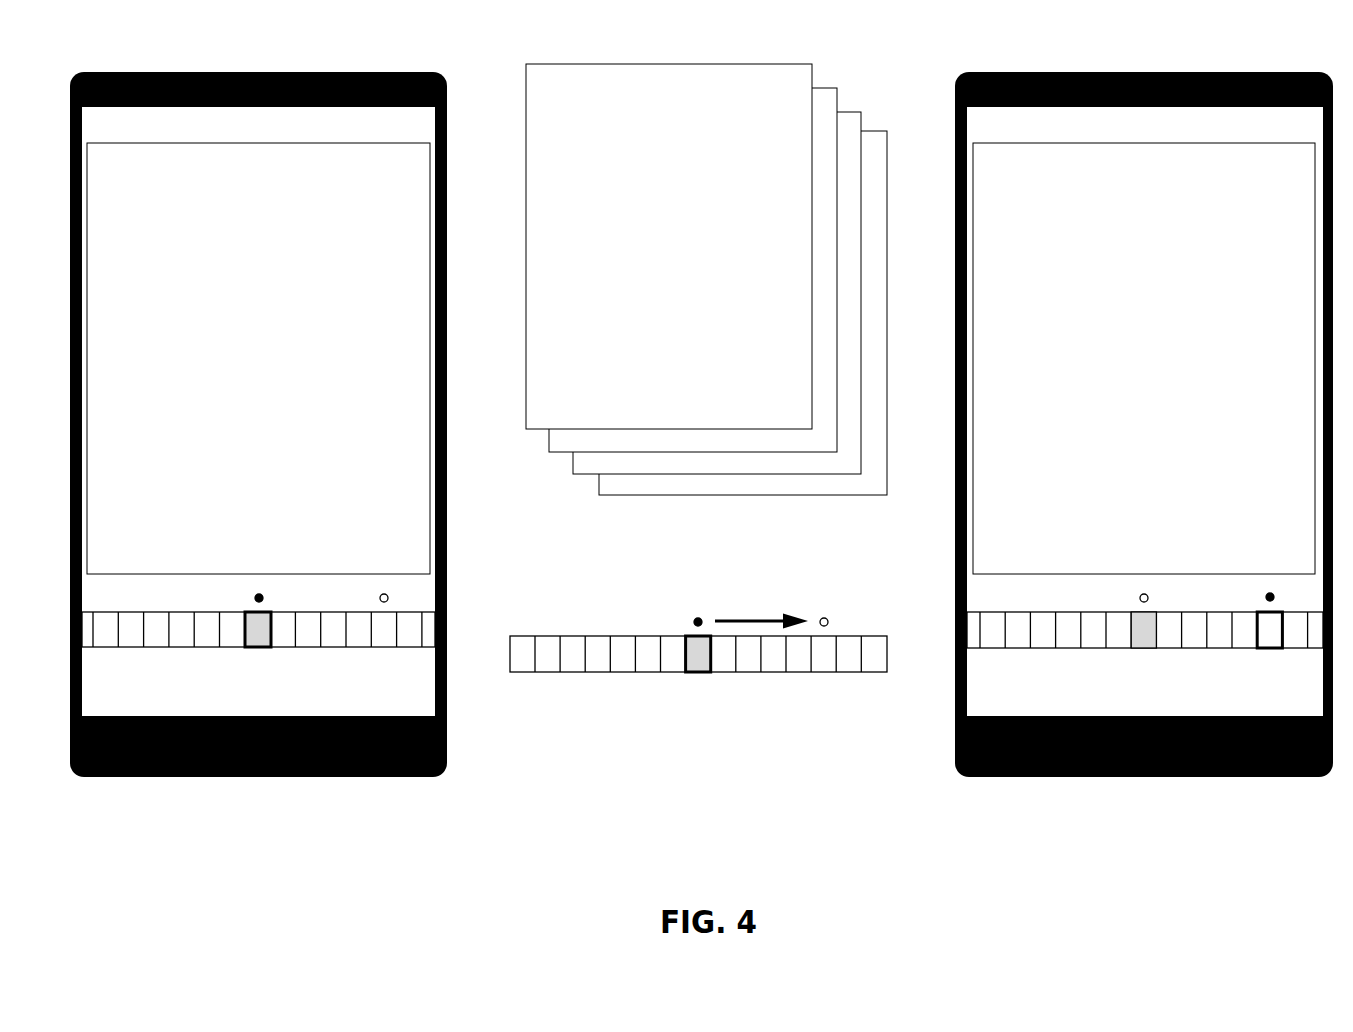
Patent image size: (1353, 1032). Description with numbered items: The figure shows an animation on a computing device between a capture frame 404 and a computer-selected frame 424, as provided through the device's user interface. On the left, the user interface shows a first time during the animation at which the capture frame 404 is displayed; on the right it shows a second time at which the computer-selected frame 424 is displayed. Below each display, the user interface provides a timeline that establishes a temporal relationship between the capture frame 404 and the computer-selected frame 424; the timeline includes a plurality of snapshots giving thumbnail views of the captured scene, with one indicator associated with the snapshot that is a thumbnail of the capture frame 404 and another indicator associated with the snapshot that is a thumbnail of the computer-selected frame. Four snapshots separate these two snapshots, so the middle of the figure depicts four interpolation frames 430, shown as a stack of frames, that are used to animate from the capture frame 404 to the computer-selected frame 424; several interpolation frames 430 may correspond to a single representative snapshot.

The capture frame 404 is at (422, 172).
The computer-selected frame 424 is at (1307, 172).
The interpolation frames 430 is at (813, 80).